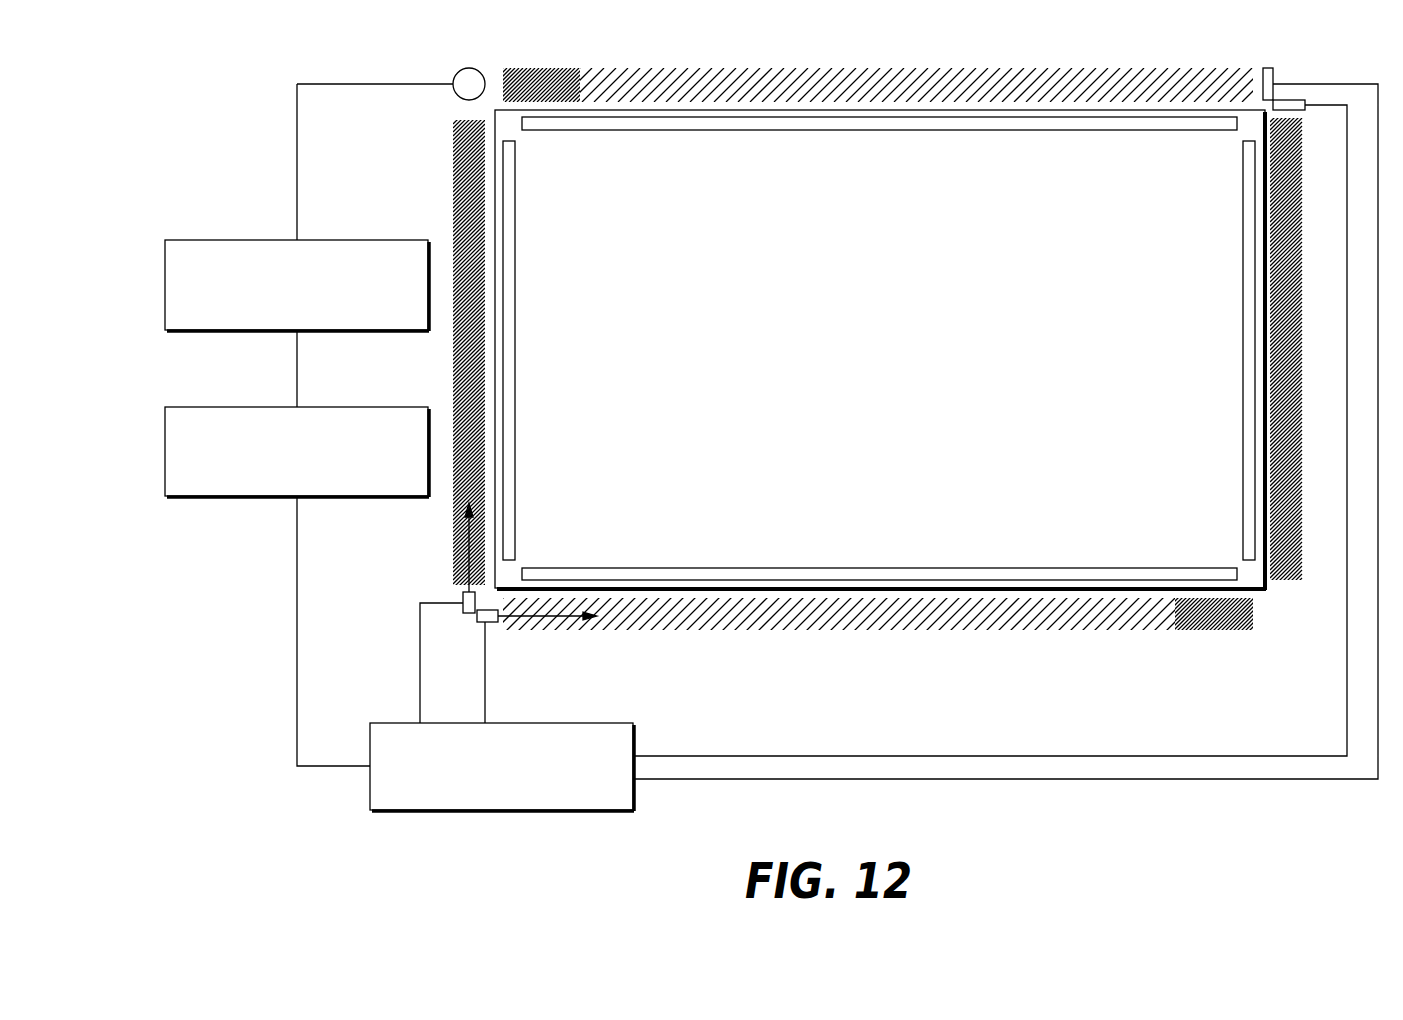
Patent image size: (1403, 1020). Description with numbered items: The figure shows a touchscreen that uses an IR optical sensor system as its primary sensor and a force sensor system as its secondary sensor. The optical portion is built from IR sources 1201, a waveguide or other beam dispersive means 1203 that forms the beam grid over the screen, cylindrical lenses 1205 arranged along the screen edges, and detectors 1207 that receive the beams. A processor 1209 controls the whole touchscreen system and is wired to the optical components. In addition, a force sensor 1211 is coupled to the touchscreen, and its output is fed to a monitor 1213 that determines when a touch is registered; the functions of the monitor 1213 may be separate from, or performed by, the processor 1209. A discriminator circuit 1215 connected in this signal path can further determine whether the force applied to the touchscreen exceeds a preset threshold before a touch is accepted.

The IR sources 1201 is at (464, 616).
The waveguide or other beam dispersive means 1203 is at (1293, 643).
The cylindrical lenses 1205 is at (1243, 530).
The detectors 1207 is at (1276, 83).
The processor 1209 is at (635, 738).
The force sensor 1211 is at (455, 72).
The monitor 1213 is at (327, 240).
The discriminator circuit 1215 is at (318, 407).